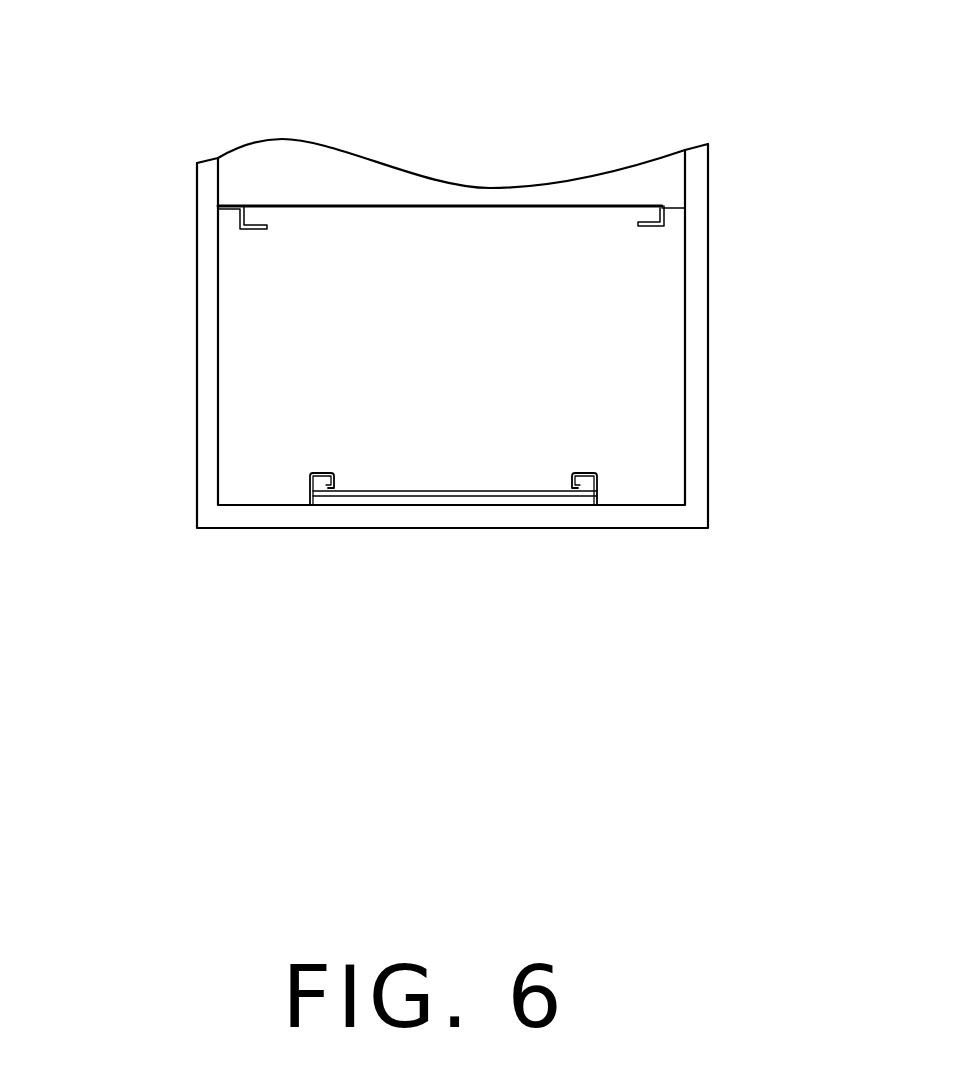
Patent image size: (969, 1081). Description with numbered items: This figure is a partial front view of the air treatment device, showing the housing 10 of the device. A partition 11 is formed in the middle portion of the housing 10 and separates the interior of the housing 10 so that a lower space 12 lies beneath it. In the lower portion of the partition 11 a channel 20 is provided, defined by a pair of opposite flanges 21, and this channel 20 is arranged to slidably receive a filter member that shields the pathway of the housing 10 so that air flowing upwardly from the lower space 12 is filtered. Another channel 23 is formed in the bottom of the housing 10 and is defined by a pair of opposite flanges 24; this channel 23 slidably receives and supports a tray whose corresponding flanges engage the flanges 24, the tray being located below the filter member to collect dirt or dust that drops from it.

The housing 10 is at (235, 530).
The partition 11 is at (350, 190).
The lower space 12 is at (255, 362).
The channel 20 is at (232, 225).
The flanges 21 is at (637, 213).
The channel 23 is at (582, 502).
The flanges 24 is at (323, 487).